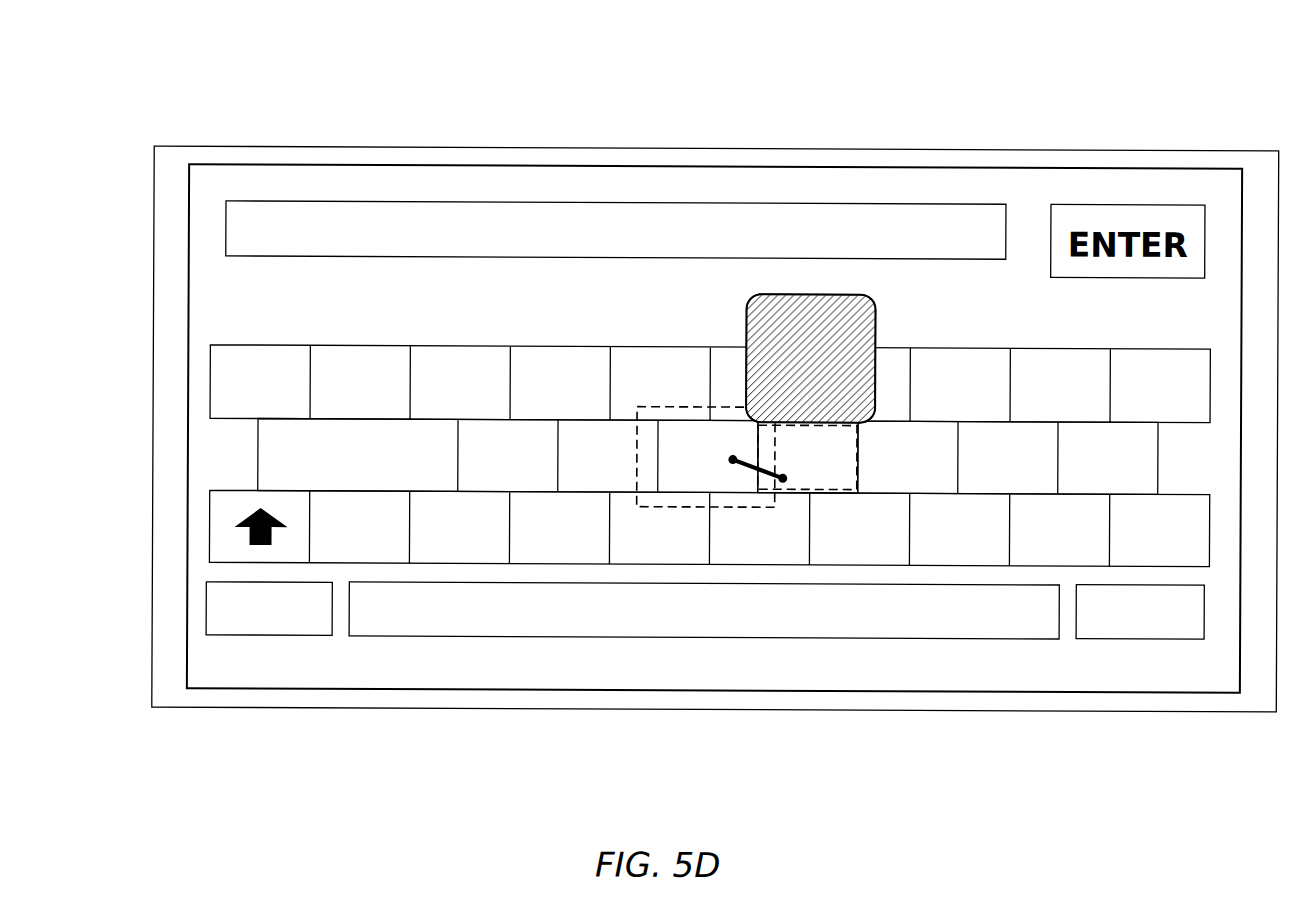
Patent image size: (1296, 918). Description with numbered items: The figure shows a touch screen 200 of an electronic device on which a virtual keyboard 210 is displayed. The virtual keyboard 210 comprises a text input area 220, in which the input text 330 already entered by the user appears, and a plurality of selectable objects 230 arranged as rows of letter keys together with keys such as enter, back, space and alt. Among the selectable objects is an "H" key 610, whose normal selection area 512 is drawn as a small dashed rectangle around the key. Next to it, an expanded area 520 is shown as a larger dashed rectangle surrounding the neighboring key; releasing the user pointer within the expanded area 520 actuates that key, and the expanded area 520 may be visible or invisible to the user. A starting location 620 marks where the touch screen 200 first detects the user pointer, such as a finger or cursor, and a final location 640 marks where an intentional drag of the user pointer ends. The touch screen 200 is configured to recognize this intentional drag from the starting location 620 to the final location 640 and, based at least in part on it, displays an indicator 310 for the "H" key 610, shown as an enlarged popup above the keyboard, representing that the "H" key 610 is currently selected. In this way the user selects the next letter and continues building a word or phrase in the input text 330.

The touch screen 200 is at (931, 149).
The virtual keyboard 210 is at (1023, 166).
The text input area 220 is at (239, 204).
The input text 330 is at (321, 224).
The plurality of selectable objects 230 is at (260, 347).
The indicator 310 is at (875, 356).
The expanded area 520 is at (637, 458).
The starting location 620 is at (730, 460).
The final location 640 is at (783, 478).
The normal selection area 512 is at (810, 490).
The "H" key 610 is at (859, 458).